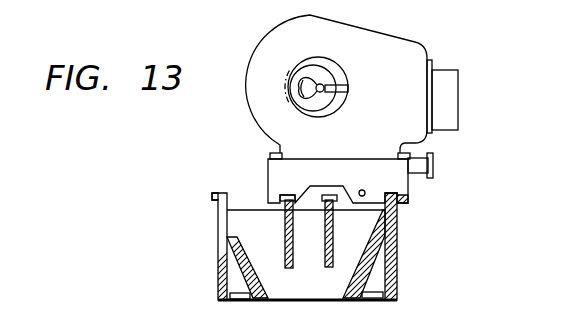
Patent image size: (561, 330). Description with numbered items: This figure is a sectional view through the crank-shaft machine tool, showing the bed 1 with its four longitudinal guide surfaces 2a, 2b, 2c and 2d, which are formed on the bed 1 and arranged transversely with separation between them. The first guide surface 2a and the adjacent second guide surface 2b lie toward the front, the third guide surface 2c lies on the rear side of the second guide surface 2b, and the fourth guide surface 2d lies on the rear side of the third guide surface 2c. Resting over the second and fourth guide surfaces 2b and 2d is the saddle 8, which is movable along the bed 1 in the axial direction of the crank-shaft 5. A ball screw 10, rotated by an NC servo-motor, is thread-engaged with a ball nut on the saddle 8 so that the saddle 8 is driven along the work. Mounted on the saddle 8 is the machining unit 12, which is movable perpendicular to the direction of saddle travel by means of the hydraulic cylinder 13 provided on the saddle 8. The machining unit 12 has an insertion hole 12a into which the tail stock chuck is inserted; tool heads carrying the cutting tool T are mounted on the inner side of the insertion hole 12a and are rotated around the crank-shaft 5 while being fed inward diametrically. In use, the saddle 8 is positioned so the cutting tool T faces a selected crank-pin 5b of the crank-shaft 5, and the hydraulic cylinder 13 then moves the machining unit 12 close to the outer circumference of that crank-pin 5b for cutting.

The bed 1 is at (398, 265).
The first guide surface 2a is at (212, 192).
The second guide surface 2b is at (290, 195).
The third guide surface 2c is at (333, 196).
The fourth guide surface 2d is at (402, 190).
The crank-shaft 5 is at (300, 70).
The crank-pin 5b is at (321, 84).
The saddle 8 is at (268, 178).
The ball screw 10 is at (361, 197).
The machining unit 12 is at (390, 40).
The insertion hole 12a is at (338, 107).
The hydraulic cylinder 13 is at (434, 165).
The cutting tool T is at (342, 80).